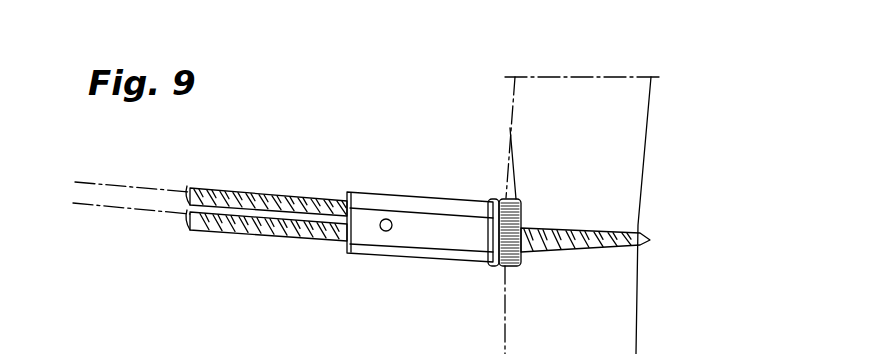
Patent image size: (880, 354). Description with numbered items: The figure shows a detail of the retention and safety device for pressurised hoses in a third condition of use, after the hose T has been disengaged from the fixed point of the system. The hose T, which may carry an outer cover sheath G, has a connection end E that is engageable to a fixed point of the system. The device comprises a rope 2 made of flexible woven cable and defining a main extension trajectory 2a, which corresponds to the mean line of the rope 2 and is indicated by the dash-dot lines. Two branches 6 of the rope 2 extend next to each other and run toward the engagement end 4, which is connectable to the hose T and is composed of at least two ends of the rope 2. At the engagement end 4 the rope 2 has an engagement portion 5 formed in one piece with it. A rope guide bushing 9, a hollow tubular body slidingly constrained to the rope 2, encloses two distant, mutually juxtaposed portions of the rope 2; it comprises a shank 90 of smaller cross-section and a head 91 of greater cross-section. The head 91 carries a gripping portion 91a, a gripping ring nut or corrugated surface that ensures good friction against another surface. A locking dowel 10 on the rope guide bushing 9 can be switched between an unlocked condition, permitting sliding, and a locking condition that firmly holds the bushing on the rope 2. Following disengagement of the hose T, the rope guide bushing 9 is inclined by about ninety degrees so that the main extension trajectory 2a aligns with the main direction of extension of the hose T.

The rope 2 is at (261, 233).
The main extension trajectory 2a is at (153, 190).
The engagement end 4 is at (330, 208).
The engagement portion 5 is at (647, 242).
The branches 6 is at (233, 197).
The rope guide bushing 9 is at (456, 278).
The locking dowel 10 is at (387, 212).
The shank 90 is at (363, 256).
The head 91 is at (509, 268).
The gripping portion 91a is at (510, 128).
The connection end E is at (633, 103).
The hose T is at (642, 132).
The outer cover sheath G is at (625, 192).